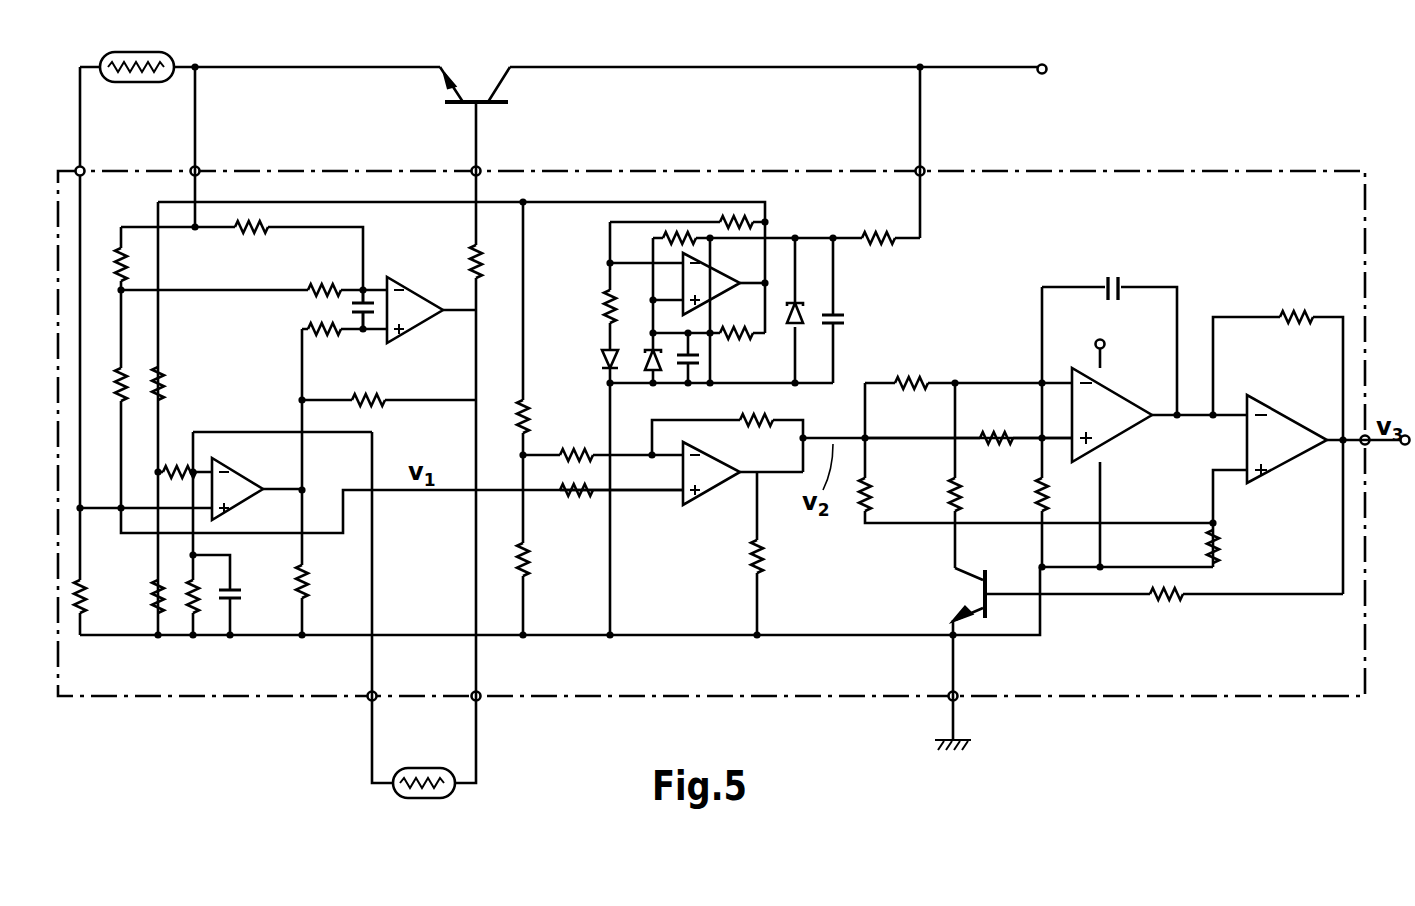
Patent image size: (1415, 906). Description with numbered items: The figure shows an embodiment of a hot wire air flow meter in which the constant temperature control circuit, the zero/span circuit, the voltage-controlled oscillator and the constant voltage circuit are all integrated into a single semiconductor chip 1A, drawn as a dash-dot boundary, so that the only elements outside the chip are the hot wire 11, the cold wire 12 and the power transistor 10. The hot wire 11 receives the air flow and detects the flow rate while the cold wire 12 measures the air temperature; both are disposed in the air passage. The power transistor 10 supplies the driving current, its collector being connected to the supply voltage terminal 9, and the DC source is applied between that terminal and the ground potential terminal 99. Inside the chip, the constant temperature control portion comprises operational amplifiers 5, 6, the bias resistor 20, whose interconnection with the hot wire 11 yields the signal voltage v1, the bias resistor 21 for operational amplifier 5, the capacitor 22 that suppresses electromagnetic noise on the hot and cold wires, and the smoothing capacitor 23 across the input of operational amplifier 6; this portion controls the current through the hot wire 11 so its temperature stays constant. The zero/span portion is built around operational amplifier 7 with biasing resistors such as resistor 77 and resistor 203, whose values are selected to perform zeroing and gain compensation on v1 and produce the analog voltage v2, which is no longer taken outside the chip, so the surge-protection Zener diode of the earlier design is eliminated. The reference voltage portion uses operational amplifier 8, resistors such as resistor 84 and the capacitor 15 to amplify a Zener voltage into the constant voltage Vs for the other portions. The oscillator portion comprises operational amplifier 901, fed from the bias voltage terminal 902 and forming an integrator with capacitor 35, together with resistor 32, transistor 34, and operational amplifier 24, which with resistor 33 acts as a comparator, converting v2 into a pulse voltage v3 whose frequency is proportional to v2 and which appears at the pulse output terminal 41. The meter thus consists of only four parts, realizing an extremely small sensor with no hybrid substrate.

The single chip 1A is at (1103, 172).
The operational amplifier 5 is at (240, 470).
The operational amplifier 6 is at (425, 292).
The operational amplifier 7 is at (717, 485).
The operational amplifier 8 is at (728, 270).
The supply voltage terminal 9 is at (1047, 65).
The power transistor 10 is at (498, 105).
The hot wire 11 is at (158, 52).
The cold wire 12 is at (415, 768).
The capacitor 15 is at (845, 315).
The bias resistor 20 is at (86, 595).
The bias resistor 21 is at (121, 400).
The capacitor 22 is at (238, 600).
The smoothing capacitor 23 is at (350, 306).
The operational amplifier 24 is at (1305, 425).
The resistor 32 is at (915, 378).
The resistor 33 is at (1293, 312).
The transistor 34 is at (980, 593).
The capacitor 35 is at (1123, 285).
The pulse output terminal 41 is at (1406, 447).
The biasing resistor 77 is at (528, 570).
The resistor 84 is at (878, 236).
The ground potential terminal 99 is at (960, 745).
The resistor 203 is at (768, 418).
The operational amplifier 901 is at (1128, 397).
The bias voltage terminal 902 is at (1096, 340).